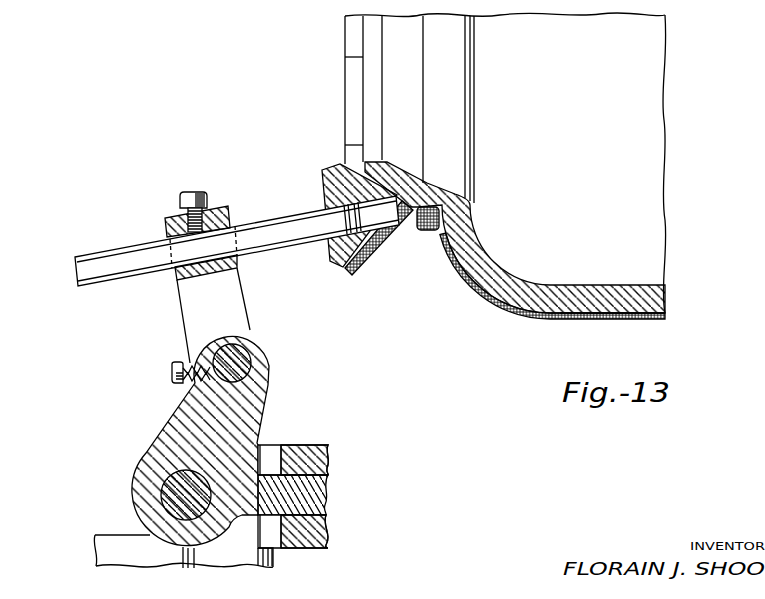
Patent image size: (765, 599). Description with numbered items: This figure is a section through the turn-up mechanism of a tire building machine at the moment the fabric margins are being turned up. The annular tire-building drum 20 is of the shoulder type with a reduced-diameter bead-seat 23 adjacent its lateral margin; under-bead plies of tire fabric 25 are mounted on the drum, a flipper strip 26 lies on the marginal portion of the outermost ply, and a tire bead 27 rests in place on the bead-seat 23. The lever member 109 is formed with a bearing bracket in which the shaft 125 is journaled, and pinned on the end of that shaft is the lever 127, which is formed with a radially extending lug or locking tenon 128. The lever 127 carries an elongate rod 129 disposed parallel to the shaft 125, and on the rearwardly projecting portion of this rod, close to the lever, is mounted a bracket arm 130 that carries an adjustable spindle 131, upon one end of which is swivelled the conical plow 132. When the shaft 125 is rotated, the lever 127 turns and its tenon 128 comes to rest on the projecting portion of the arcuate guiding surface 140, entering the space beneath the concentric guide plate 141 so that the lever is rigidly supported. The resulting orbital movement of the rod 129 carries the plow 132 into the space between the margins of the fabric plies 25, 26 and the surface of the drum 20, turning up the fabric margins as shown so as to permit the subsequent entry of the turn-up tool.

The tire-building form or drum 20 is at (505, 163).
The bead-seat 23 is at (405, 212).
The under-bead ply of tire fabric 25 is at (636, 309).
The flipper strip 26 is at (508, 308).
The tire bead 27 is at (426, 232).
The lever member 109 is at (232, 563).
The shaft 125 is at (178, 508).
The lever 127 is at (168, 425).
The lug or locking tenon 128 is at (302, 498).
The rod 129 is at (240, 363).
The bracket arm 130 is at (197, 305).
The adjustable spindle 131 is at (300, 230).
The conical tool or plow 132 is at (353, 270).
The guiding surface 140 is at (298, 530).
The guide plate 141 is at (315, 458).